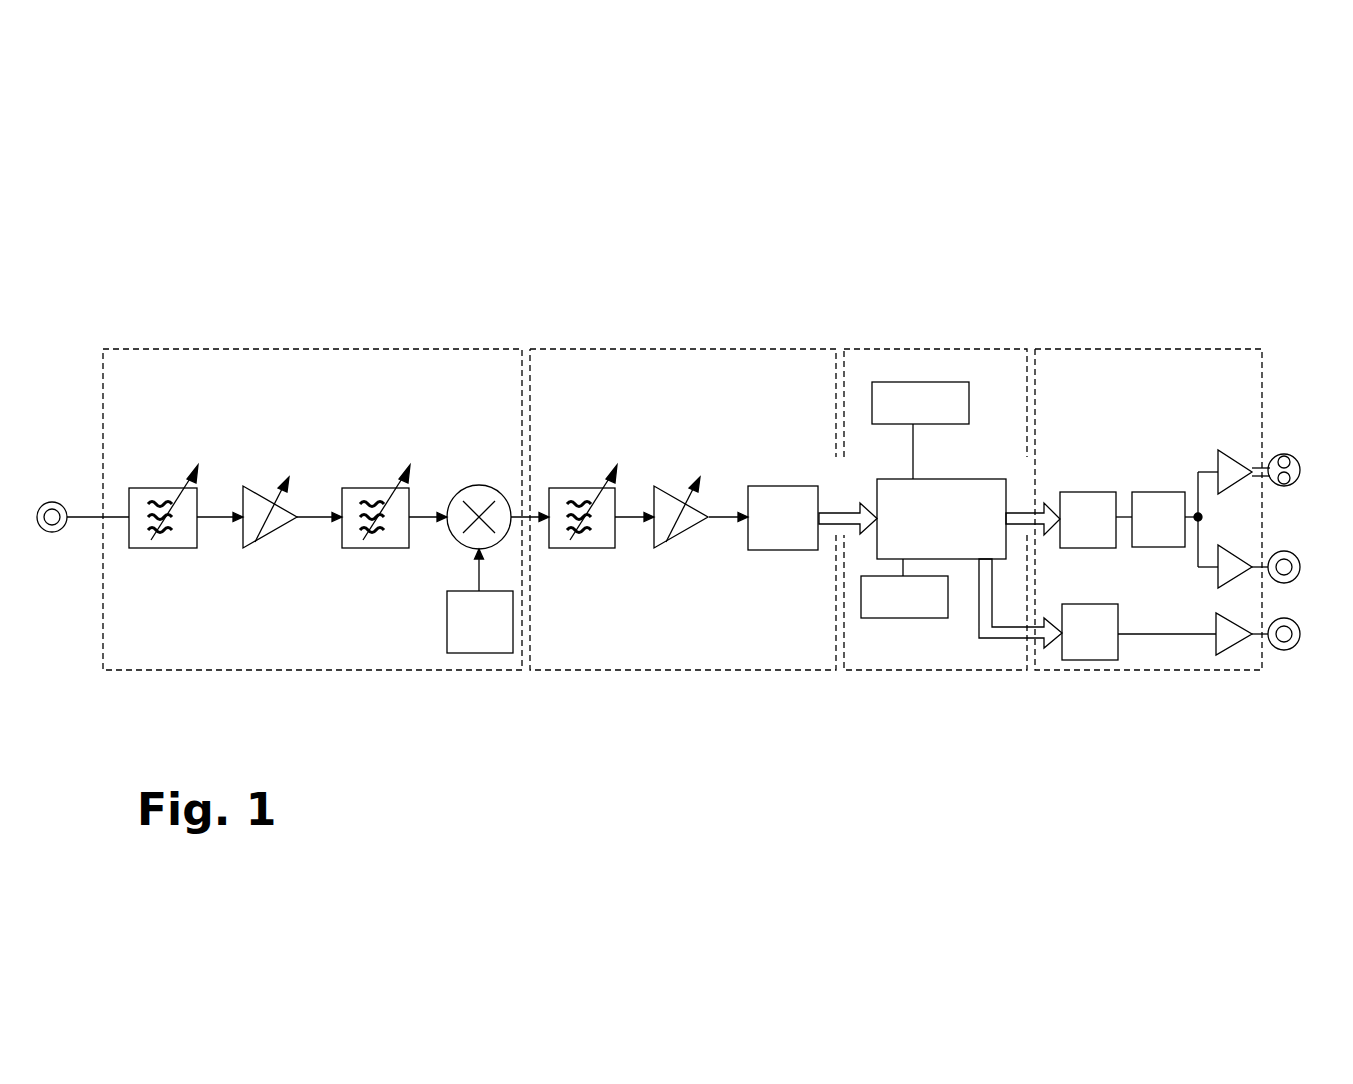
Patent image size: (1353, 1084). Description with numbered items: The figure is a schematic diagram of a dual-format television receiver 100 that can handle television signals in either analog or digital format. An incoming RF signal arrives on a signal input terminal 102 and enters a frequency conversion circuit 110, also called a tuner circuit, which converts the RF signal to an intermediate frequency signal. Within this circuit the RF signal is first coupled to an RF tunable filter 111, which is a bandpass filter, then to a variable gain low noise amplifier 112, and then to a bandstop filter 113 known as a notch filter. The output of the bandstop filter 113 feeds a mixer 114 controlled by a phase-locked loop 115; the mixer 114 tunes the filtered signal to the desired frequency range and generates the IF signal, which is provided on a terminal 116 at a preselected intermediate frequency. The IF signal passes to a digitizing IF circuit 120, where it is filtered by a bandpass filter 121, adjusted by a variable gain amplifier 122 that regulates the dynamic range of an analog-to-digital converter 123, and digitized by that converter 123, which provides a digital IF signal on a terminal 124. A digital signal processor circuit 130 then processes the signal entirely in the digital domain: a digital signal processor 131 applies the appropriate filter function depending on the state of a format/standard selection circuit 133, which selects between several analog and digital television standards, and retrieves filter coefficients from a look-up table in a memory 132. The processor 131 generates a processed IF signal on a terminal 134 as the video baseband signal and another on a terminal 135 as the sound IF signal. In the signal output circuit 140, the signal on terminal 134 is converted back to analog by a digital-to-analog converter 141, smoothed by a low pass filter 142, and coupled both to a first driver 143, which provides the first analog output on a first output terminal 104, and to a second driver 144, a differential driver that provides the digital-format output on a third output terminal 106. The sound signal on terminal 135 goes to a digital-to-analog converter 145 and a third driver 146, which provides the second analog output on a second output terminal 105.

The dual-format television receiver 100 is at (1145, 188).
The signal input terminal 102 is at (60, 508).
The first output terminal 104 is at (1300, 537).
The second output terminal 105 is at (1272, 622).
The third output terminal 106 is at (1312, 446).
The frequency conversion circuit 110 is at (300, 349).
The RF tunable filter 111 is at (170, 548).
The variable gain low noise amplifier 112 is at (285, 527).
The bandstop filter 113 is at (385, 548).
The mixer 114 is at (459, 546).
The phase-locked loop 115 is at (447, 617).
The terminal 116 is at (527, 518).
The digitizing IF circuit 120 is at (640, 349).
The bandpass filter 121 is at (582, 548).
The variable gain amplifier 122 is at (690, 535).
The analog-to-digital converter 123 is at (773, 550).
The terminal 124 is at (832, 527).
The digital signal processor circuit 130 is at (902, 349).
The digital signal processor 131 is at (950, 479).
The memory 132 is at (910, 618).
The format/standard selection circuit 133 is at (930, 382).
The terminal 134 is at (1020, 527).
The terminal 135 is at (1003, 640).
The signal output circuit 140 is at (1137, 349).
The digital-to-analog converter 141 is at (1083, 492).
The low pass filter 142 is at (1145, 492).
The first driver 143 is at (1243, 578).
The second driver 144 is at (1229, 458).
The digital-to-analog converter 145 is at (1085, 604).
The third driver 146 is at (1216, 616).